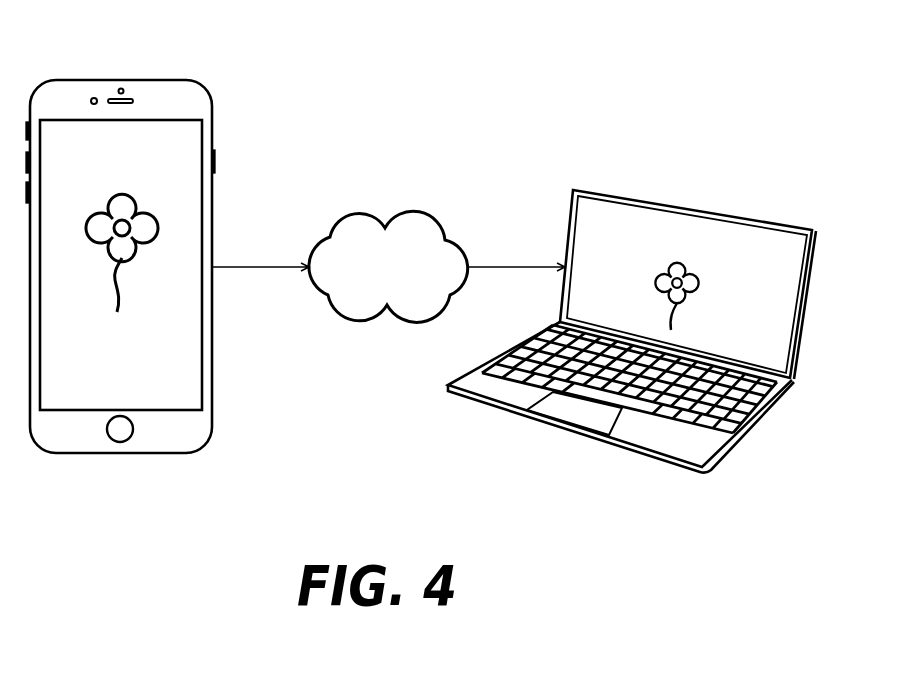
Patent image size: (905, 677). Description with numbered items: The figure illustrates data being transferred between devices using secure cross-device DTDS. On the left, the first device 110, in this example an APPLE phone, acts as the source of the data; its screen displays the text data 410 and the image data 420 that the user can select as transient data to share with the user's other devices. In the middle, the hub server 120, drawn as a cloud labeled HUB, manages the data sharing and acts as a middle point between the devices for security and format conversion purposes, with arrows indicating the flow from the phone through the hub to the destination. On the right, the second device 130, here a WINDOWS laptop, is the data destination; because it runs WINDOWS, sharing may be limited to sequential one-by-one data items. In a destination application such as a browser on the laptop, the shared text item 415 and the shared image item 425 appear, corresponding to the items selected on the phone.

The first device 110 is at (164, 79).
The hub server 120 is at (410, 215).
The second device 130 is at (692, 203).
The text data 410 is at (152, 172).
The image data 420 is at (167, 226).
The shared text item 415 is at (710, 253).
The shared image item 425 is at (700, 300).